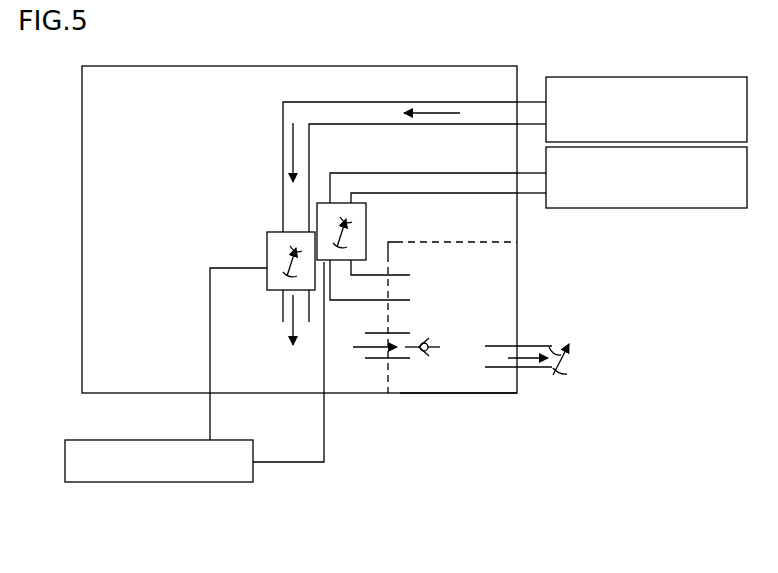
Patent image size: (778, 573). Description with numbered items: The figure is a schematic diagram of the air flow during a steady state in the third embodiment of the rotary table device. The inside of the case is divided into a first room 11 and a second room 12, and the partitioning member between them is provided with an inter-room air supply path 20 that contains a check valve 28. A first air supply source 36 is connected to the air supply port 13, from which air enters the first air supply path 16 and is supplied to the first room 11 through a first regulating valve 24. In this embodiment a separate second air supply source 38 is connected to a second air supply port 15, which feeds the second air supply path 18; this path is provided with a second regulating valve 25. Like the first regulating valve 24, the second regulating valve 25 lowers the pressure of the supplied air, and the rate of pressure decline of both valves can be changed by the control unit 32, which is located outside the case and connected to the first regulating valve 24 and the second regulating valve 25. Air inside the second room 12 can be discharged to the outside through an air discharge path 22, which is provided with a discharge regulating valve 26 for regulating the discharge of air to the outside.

The first room 11 is at (80, 356).
The second room 12 is at (470, 396).
The air supply port 13 is at (527, 100).
The second air supply port 15 is at (527, 197).
The first air supply path 16 is at (283, 180).
The second air supply path 18 is at (471, 172).
The inter-room air supply path 20 is at (382, 360).
The air discharge path 22 is at (525, 343).
The first regulating valve 24 is at (268, 278).
The second regulating valve 25 is at (366, 237).
The discharge regulating valve 26 is at (570, 352).
The check valve 28 is at (438, 350).
The control unit 32 is at (188, 483).
The first air supply source 36 is at (612, 76).
The second air supply source 38 is at (623, 208).